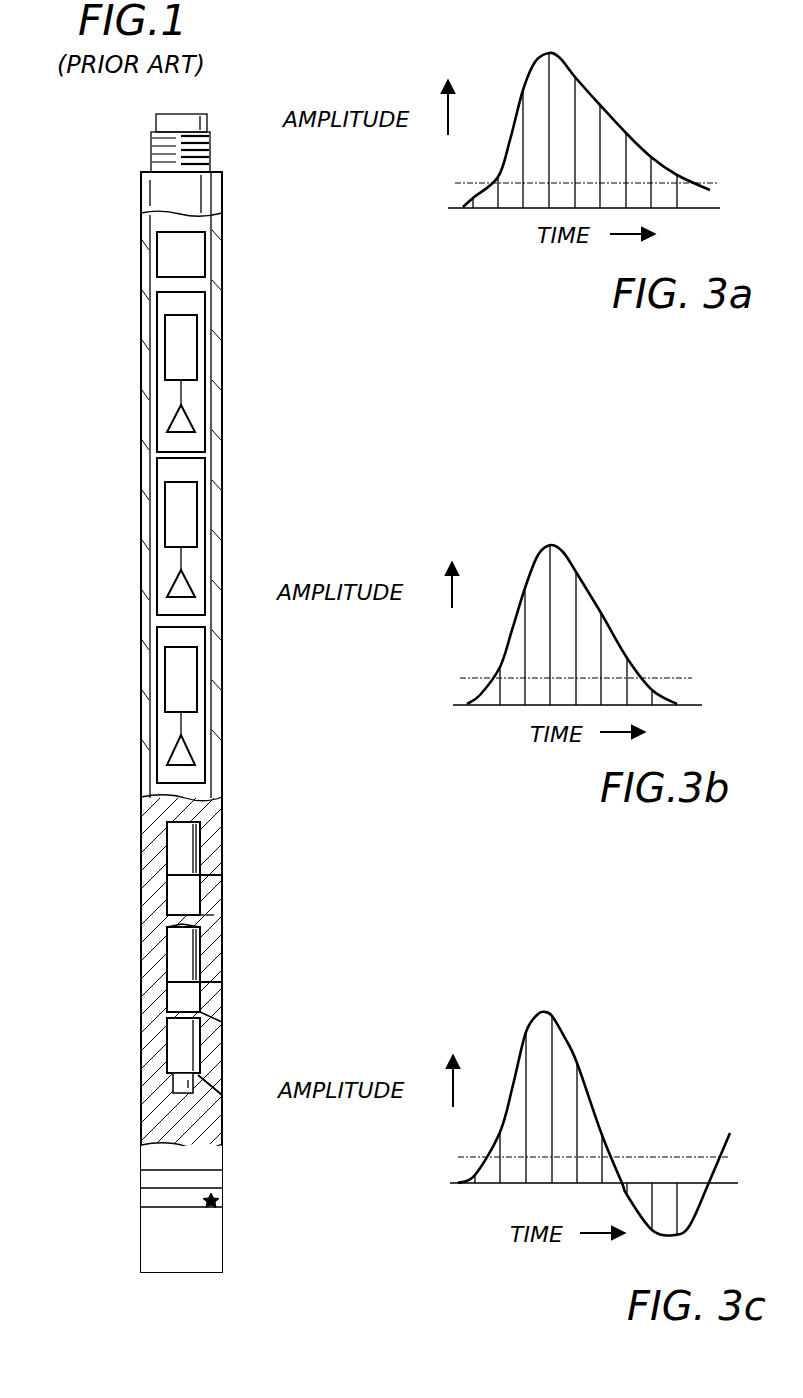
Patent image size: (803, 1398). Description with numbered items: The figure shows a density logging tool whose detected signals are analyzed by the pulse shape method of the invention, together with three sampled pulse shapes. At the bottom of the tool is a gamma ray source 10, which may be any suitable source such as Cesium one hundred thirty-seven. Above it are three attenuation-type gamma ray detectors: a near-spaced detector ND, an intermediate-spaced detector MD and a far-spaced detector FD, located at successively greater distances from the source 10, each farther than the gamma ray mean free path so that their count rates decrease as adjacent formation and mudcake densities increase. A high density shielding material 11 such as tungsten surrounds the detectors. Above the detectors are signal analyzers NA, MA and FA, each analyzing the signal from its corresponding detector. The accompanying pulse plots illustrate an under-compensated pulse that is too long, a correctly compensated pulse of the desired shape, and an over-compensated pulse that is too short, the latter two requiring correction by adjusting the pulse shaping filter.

The far signal analyzer FA is at (189, 348).
The intermediate signal analyzer MA is at (168, 512).
The near signal analyzer NA is at (197, 672).
The far-spaced gamma ray detector FD is at (175, 845).
The intermediate-spaced gamma ray detector MD is at (175, 957).
The near-spaced gamma ray detector ND is at (175, 1055).
The high density shielding material 11 is at (224, 840).
The gamma ray source 10 is at (219, 1198).